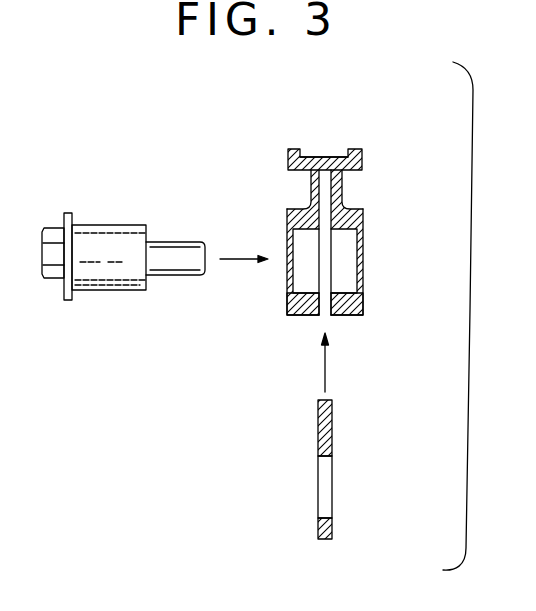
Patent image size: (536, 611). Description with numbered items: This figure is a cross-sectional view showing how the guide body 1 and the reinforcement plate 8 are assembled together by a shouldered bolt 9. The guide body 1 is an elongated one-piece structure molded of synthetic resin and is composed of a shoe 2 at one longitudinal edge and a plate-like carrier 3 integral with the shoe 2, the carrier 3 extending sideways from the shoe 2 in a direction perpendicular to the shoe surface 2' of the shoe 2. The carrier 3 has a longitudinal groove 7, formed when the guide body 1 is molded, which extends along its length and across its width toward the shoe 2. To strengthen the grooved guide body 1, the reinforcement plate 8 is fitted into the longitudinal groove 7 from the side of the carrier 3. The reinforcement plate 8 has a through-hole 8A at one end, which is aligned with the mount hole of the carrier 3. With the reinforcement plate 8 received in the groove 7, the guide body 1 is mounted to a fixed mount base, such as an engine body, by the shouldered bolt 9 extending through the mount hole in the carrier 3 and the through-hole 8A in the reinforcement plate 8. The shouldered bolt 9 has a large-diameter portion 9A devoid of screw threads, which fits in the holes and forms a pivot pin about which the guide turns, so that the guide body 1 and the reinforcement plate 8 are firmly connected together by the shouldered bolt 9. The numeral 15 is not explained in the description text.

The guide body 1 is at (330, 197).
The shoe 2 is at (324, 143).
The shoe surface 2' is at (280, 128).
The carrier 3 is at (342, 188).
The longitudinal groove 7 is at (323, 217).
The lower anchoring flange 15 is at (344, 292).
The reinforcement plate 8 is at (368, 469).
The through-hole 8A is at (321, 518).
The shouldered bolt 9 is at (123, 264).
The large-diameter portion 9A is at (112, 237).